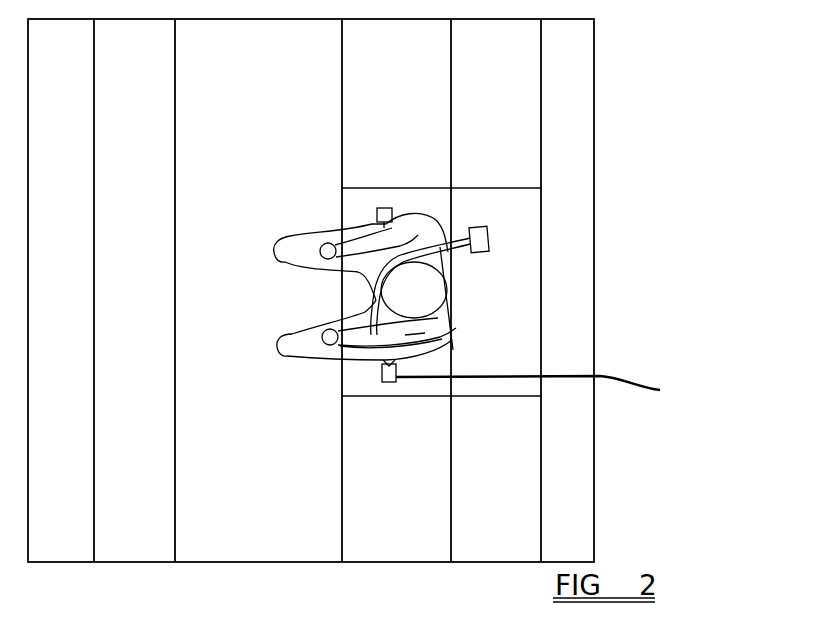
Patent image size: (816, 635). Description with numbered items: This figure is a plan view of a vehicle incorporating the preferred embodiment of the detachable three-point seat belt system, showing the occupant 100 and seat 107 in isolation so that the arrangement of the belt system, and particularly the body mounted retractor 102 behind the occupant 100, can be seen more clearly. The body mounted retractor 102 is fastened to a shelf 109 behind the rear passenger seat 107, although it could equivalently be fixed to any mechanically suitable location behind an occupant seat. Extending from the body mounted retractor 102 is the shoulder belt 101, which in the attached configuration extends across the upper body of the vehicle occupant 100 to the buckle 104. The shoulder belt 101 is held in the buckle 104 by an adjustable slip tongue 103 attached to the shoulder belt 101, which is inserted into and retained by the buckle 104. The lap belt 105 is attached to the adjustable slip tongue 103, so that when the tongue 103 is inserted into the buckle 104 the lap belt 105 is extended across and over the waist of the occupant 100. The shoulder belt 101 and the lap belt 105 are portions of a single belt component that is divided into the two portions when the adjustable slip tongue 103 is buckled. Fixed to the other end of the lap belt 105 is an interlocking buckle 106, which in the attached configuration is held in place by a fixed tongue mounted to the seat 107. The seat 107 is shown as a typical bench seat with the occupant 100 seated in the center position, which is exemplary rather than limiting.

The vehicle occupant 100 is at (438, 318).
The shoulder belt 101 is at (452, 268).
The body mounted retractor 102 is at (488, 236).
The adjustable (slip) tongue 103 is at (396, 372).
The buckle 104 is at (545, 388).
The lap belt 105 is at (437, 333).
The interlocking buckle 106 is at (384, 208).
The vehicle seat 107 is at (415, 430).
The shelf 109 is at (502, 215).